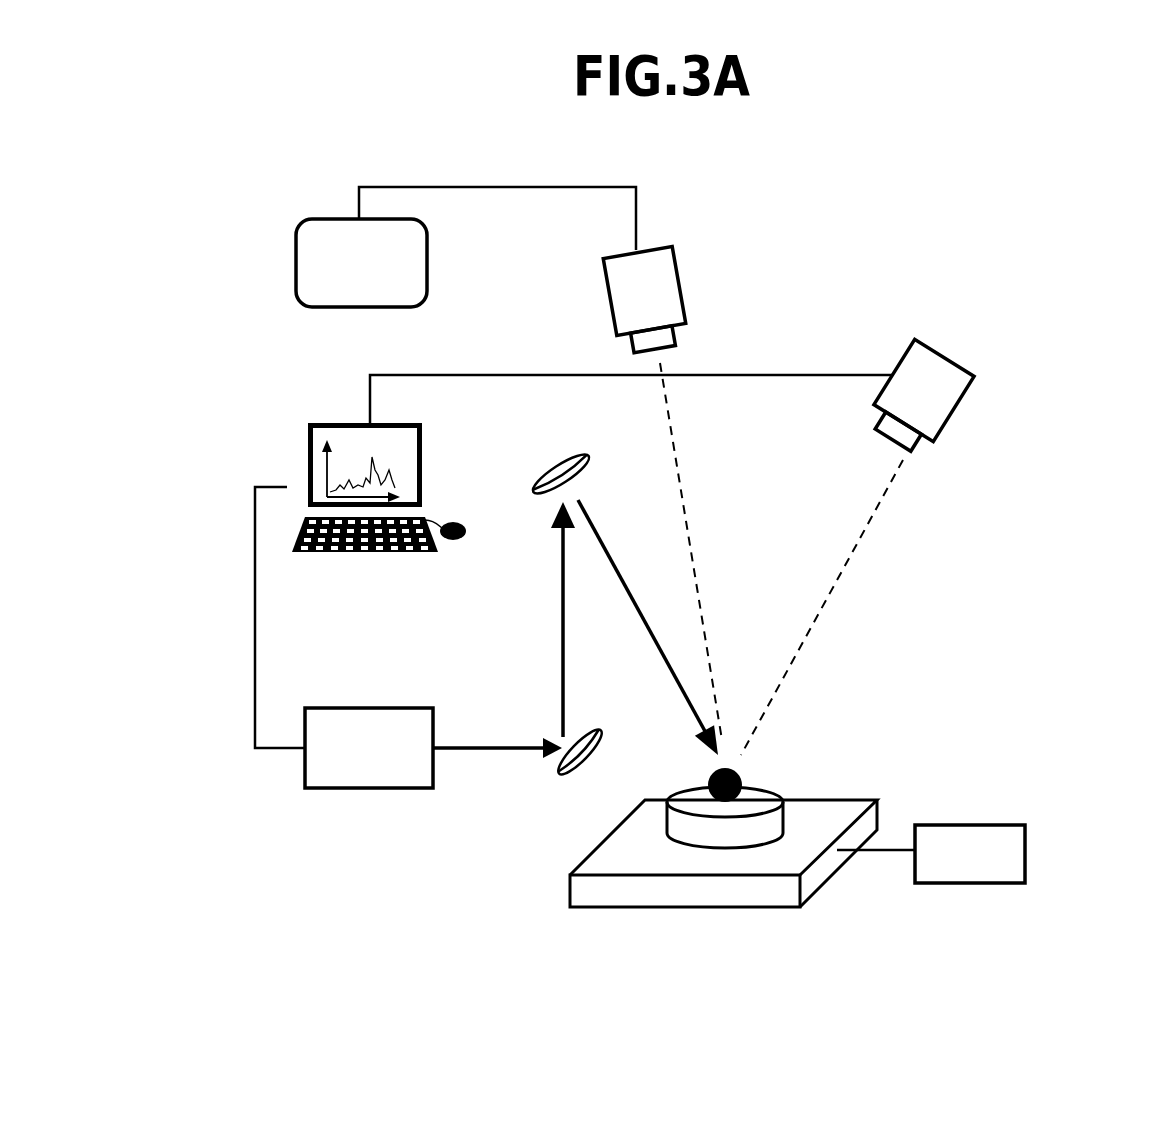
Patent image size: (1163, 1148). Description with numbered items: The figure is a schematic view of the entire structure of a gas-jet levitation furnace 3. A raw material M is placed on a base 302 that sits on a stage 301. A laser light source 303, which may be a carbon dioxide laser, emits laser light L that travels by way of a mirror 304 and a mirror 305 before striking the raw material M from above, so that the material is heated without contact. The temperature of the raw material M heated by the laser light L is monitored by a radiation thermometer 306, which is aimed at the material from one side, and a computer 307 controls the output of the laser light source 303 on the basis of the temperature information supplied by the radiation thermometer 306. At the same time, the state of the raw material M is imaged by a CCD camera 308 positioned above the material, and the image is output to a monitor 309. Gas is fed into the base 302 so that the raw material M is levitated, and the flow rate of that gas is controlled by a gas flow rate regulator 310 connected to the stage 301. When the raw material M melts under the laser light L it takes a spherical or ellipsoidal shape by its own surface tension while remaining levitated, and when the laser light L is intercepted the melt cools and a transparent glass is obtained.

The gas-jet levitation furnace 3 is at (244, 108).
The stage 301 is at (570, 887).
The base 302 is at (718, 828).
The laser light source 303 is at (348, 788).
The mirror 304 is at (553, 778).
The mirror 305 is at (548, 468).
The radiation thermometer 306 is at (903, 357).
The computer 307 is at (308, 423).
The CCD camera 308 is at (608, 302).
The monitor 309 is at (313, 217).
The gas flow rate regulator 310 is at (1025, 860).
The laser light L is at (485, 740).
The raw material M is at (742, 778).